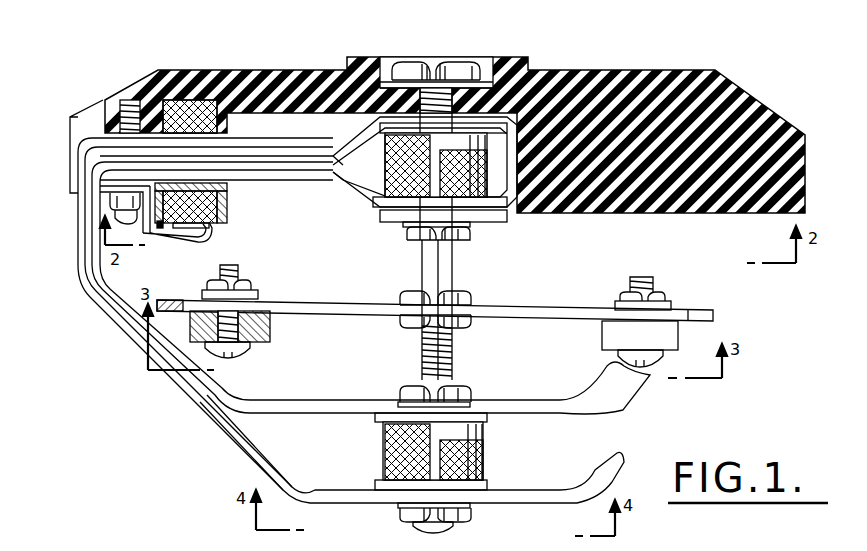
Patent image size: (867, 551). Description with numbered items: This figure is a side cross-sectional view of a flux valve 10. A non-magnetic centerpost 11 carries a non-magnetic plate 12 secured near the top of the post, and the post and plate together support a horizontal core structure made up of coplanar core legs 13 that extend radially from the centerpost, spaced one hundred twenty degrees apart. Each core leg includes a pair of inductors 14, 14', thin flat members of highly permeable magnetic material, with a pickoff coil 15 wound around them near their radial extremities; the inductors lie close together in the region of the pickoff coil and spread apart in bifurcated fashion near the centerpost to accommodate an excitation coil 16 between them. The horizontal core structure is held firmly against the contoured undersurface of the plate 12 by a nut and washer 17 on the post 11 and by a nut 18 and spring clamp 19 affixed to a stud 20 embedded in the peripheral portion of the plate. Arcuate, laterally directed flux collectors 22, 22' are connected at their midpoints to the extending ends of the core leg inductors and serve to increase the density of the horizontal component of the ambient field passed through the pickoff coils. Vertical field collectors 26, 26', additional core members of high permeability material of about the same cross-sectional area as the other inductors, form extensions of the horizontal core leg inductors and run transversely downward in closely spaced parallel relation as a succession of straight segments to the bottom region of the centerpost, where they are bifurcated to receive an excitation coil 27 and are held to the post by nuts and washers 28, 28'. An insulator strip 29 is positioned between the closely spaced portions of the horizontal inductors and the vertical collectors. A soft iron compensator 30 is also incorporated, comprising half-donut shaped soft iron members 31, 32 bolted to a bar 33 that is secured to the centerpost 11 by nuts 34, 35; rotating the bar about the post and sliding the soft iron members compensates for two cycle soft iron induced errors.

The flux valve 10 is at (682, 58).
The centerpost 11 is at (420, 266).
The plate 12 is at (762, 110).
The core leg 13 is at (270, 181).
The inductor 14 is at (401, 160).
The inductor 14' is at (378, 161).
The pickoff coil 15 is at (224, 202).
The excitation coil 16 is at (388, 170).
The nut and washer 17 is at (478, 230).
The nut 18 is at (112, 206).
The spring clamp 19 is at (302, 105).
The stud 20 is at (128, 100).
The flux collector 22 is at (174, 210).
The flux collector 22' is at (174, 192).
The vertical field collector 26 is at (220, 442).
The vertical field collector 26' is at (326, 339).
The excitation coil 27 is at (385, 455).
The nut and washer 28 is at (459, 517).
The nut and washer 28' is at (454, 381).
The insulator strip 29 is at (108, 300).
The soft iron compensator 30 is at (563, 298).
The soft iron member 31 is at (268, 326).
The soft iron member 32 is at (604, 338).
The bar 33 is at (318, 302).
The nut 34 is at (474, 294).
The nut 35 is at (405, 325).